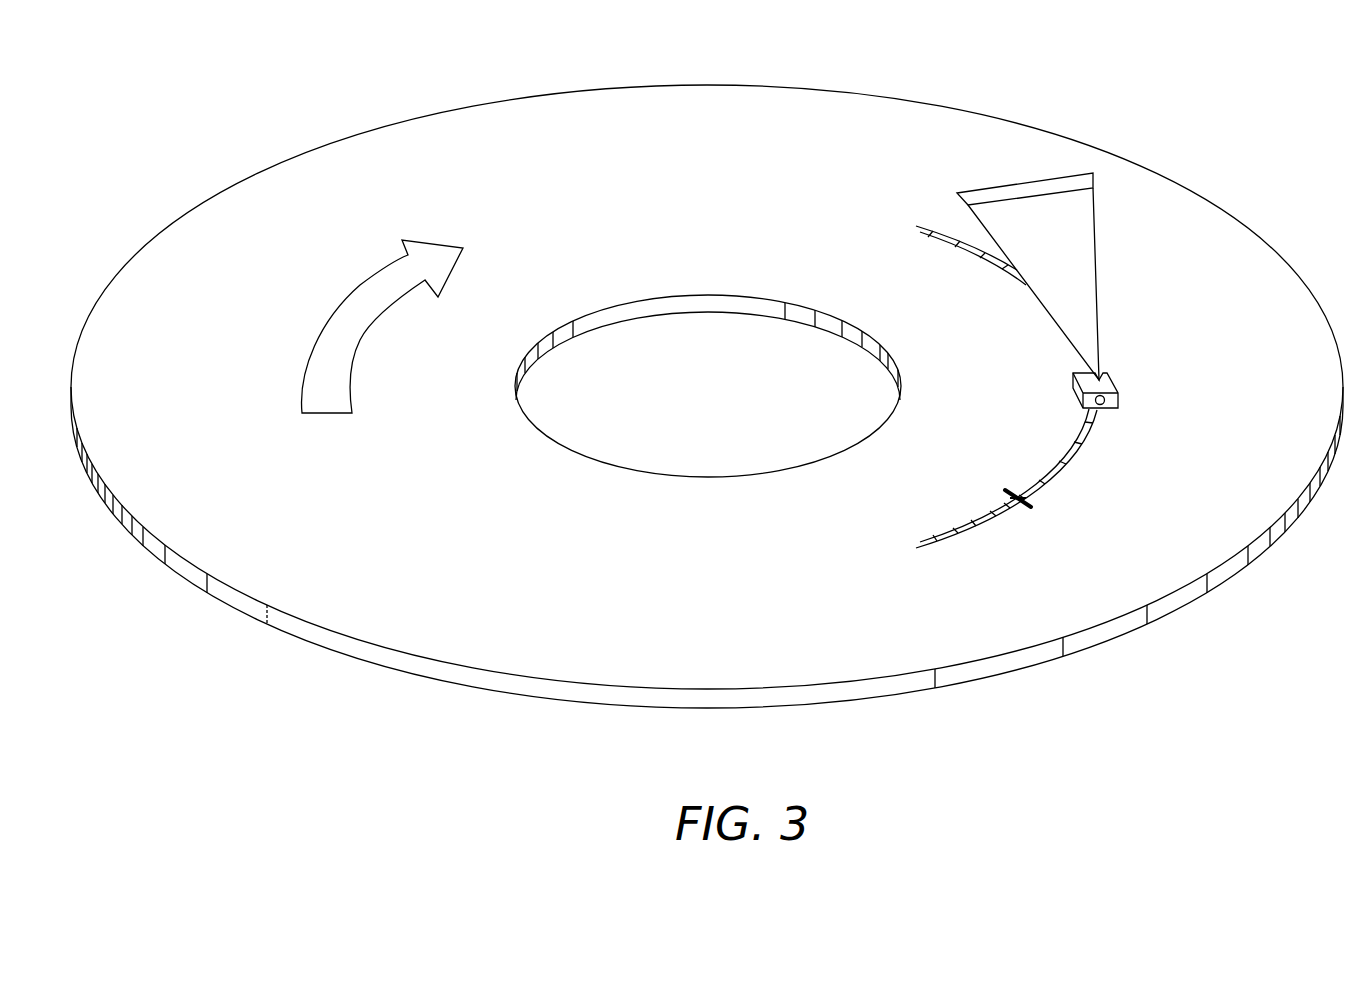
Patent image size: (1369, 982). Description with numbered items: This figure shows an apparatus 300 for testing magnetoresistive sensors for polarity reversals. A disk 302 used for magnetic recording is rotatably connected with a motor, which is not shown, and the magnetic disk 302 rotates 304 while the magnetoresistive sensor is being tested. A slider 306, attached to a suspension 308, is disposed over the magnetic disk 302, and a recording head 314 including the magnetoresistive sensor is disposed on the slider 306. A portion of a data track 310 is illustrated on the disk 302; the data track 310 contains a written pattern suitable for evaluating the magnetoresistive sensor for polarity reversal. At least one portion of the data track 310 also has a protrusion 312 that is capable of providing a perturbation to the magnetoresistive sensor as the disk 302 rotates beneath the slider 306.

The apparatus 300 is at (140, 156).
The disk 302 is at (415, 640).
The rotation 304 is at (325, 317).
The slider 306 is at (1118, 380).
The suspension 308 is at (1088, 253).
The data track 310 is at (1076, 458).
The protrusion 312 is at (1034, 506).
The recording head 314 is at (1105, 405).